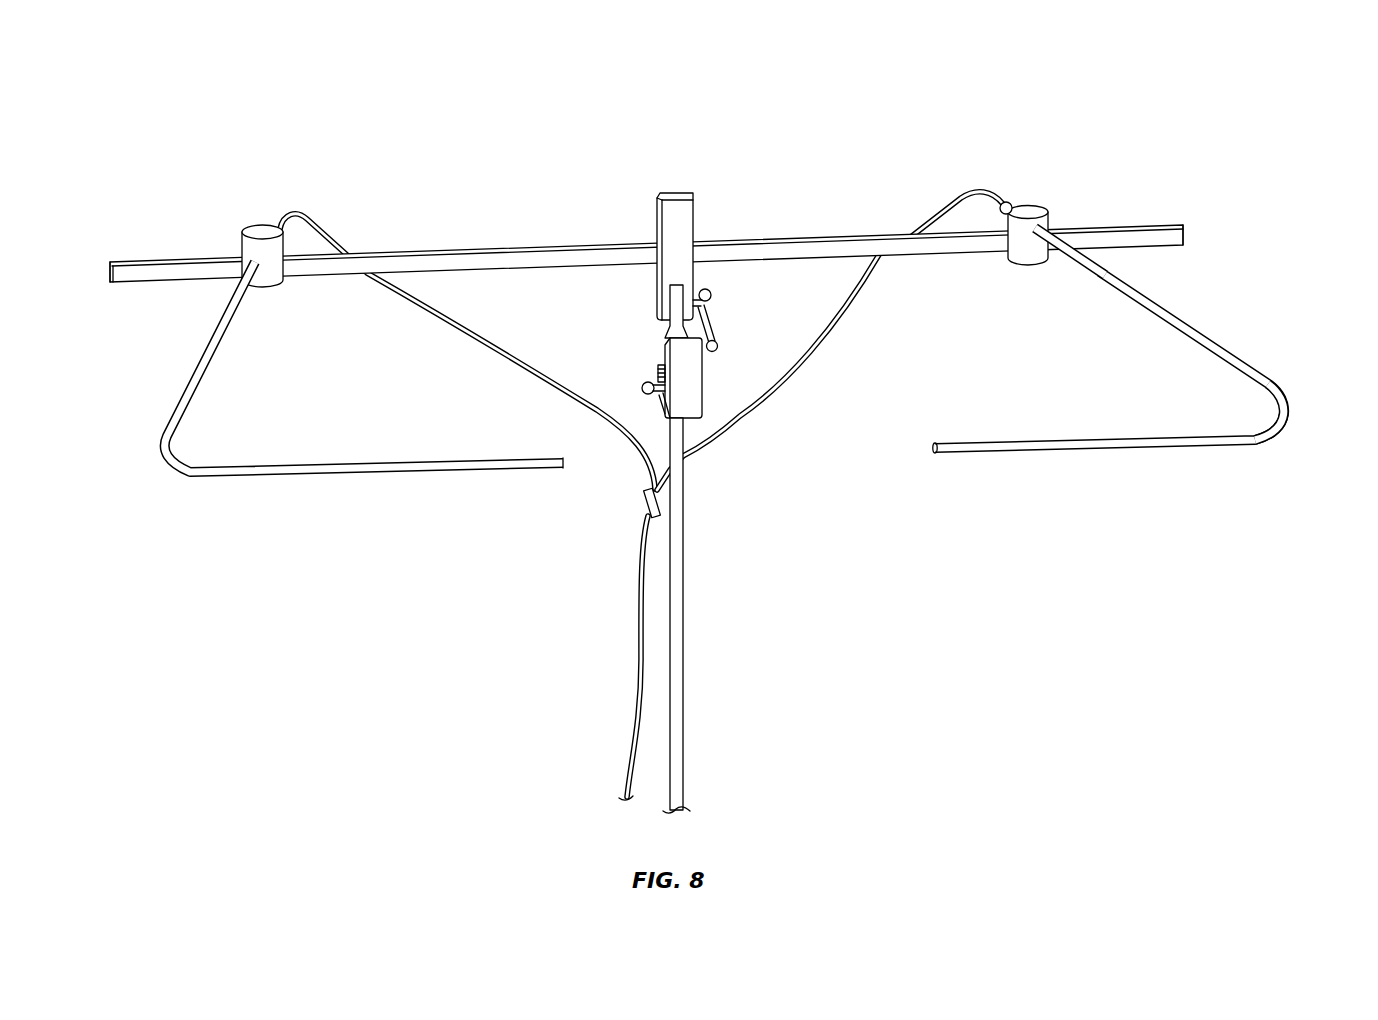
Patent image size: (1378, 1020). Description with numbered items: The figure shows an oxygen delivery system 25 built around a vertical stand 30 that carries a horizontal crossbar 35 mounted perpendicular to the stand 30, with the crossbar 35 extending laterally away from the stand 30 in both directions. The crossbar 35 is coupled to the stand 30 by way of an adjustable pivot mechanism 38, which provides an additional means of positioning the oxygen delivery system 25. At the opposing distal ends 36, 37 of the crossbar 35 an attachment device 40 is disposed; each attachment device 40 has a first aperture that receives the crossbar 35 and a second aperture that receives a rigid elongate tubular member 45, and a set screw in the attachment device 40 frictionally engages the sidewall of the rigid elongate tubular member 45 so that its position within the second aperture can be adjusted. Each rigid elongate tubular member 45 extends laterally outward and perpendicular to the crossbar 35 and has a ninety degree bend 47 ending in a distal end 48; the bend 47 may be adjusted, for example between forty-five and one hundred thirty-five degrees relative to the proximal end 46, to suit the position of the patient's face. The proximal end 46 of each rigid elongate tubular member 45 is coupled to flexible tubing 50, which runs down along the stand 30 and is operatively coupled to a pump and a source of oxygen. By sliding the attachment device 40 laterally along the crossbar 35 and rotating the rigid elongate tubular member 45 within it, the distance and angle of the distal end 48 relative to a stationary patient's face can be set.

The oxygen delivery system 25 is at (1101, 86).
The vertical stand 30 is at (684, 665).
The horizontal crossbar 35 is at (498, 259).
The distal end of the crossbar 36 is at (1166, 226).
The distal end of the crossbar 37 is at (118, 260).
The adjustable pivot mechanism 38 is at (668, 332).
The attachment device 40 is at (258, 237).
The rigid elongate tubular member 45 is at (1158, 300).
The proximal end 46 is at (1009, 202).
The ninety degree bend 47 is at (1291, 410).
The distal end 48 is at (567, 470).
The flexible tubing 50 is at (822, 332).